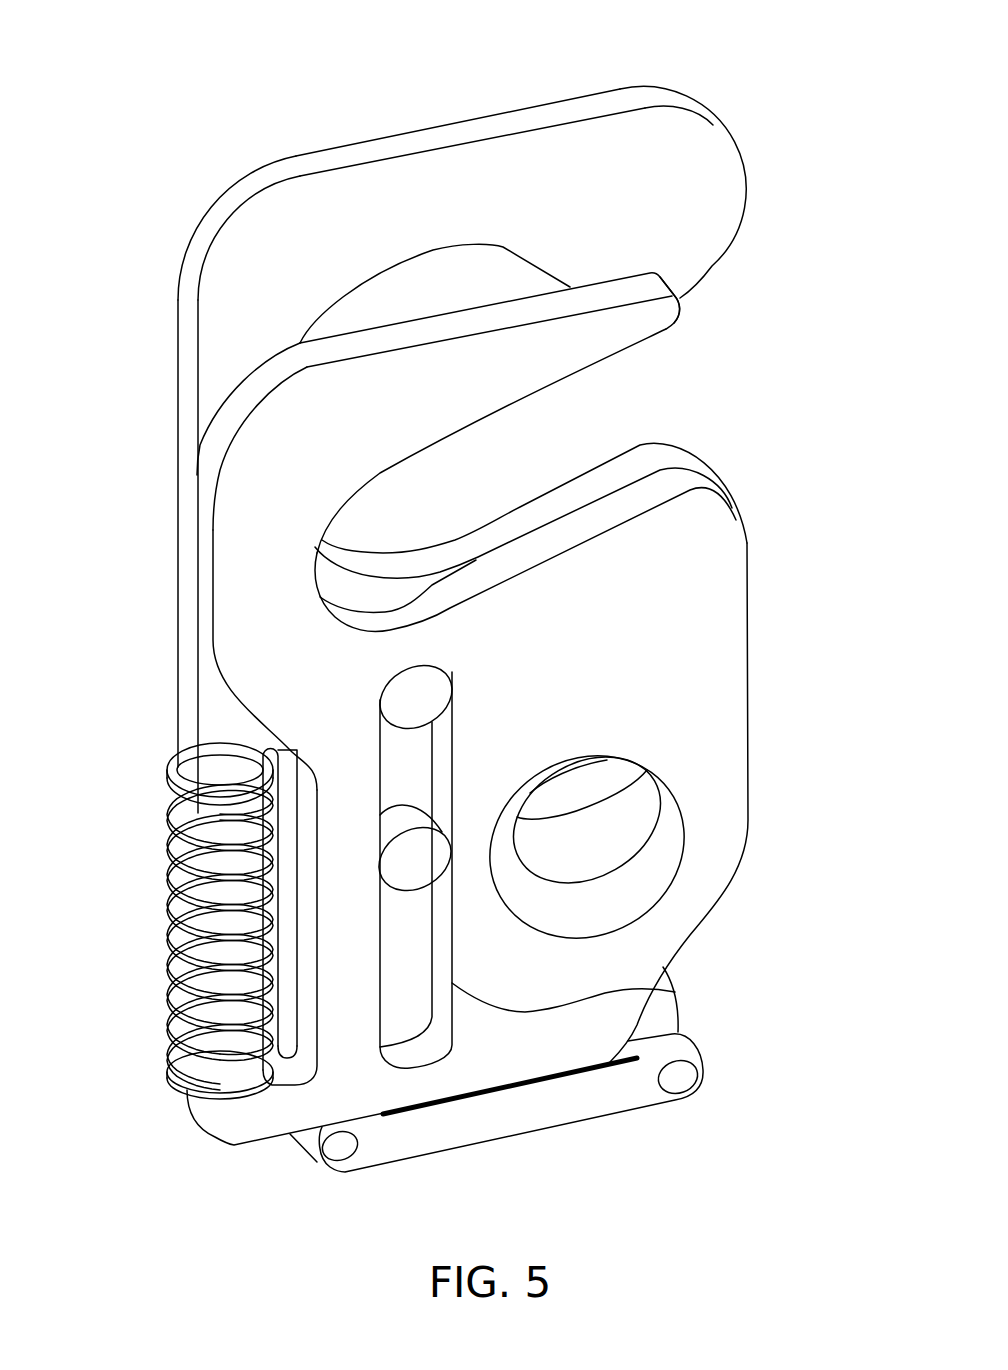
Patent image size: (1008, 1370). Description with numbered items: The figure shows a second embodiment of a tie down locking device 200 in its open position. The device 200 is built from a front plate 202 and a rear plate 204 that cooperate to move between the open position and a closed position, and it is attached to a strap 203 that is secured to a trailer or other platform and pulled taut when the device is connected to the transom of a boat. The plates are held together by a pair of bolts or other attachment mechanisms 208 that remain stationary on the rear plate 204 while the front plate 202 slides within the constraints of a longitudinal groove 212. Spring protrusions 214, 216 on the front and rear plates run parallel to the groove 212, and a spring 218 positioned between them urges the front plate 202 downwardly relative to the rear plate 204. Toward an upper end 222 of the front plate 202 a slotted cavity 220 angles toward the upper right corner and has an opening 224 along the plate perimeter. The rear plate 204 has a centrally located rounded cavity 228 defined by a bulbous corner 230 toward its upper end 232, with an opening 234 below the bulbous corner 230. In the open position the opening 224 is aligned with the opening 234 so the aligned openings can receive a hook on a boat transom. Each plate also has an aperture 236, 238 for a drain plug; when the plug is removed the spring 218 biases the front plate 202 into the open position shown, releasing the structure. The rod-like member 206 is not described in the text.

The tie down locking device 200 is at (803, 70).
The front plate 202 is at (700, 542).
The strap 203 is at (640, 1055).
The rear plate 204 is at (403, 185).
The hook member 206 is at (146, 230).
The attachment mechanisms 208 is at (435, 702).
The longitudinal groove 212 is at (675, 992).
The spring protrusion 214 is at (187, 797).
The spring protrusion 216 is at (187, 1040).
The spring 218 is at (162, 925).
The slotted cavity 220 is at (473, 460).
The upper end 222 is at (387, 407).
The opening 224 is at (632, 386).
The rounded cavity 228 is at (453, 277).
The bulbous corner 230 is at (665, 145).
The upper end 232 is at (285, 197).
The opening 234 is at (692, 302).
The aperture 236 is at (640, 887).
The aperture 238 is at (580, 793).